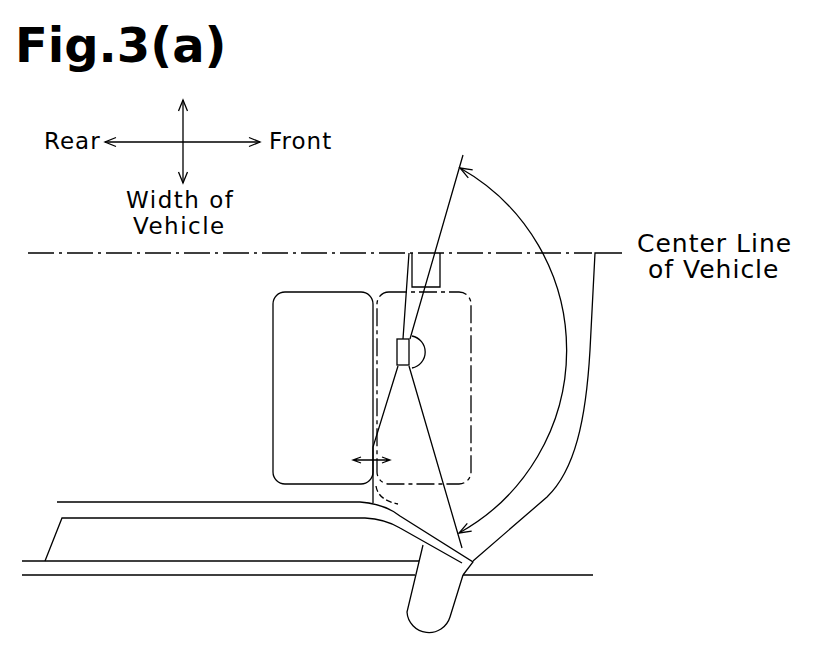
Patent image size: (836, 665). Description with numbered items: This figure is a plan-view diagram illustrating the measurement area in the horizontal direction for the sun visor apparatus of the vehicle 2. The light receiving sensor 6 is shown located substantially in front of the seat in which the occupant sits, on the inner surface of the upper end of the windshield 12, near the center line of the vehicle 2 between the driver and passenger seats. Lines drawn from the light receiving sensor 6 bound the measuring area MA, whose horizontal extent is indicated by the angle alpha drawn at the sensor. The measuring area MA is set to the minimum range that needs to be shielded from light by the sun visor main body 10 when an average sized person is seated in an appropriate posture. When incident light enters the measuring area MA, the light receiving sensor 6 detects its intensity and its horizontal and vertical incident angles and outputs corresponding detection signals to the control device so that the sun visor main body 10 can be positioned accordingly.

The vehicle 2 is at (521, 566).
The light receiving sensor 6 is at (404, 368).
The sun visor main body 10 is at (342, 485).
The windshield 12 is at (548, 496).
The measuring area MA is at (559, 408).